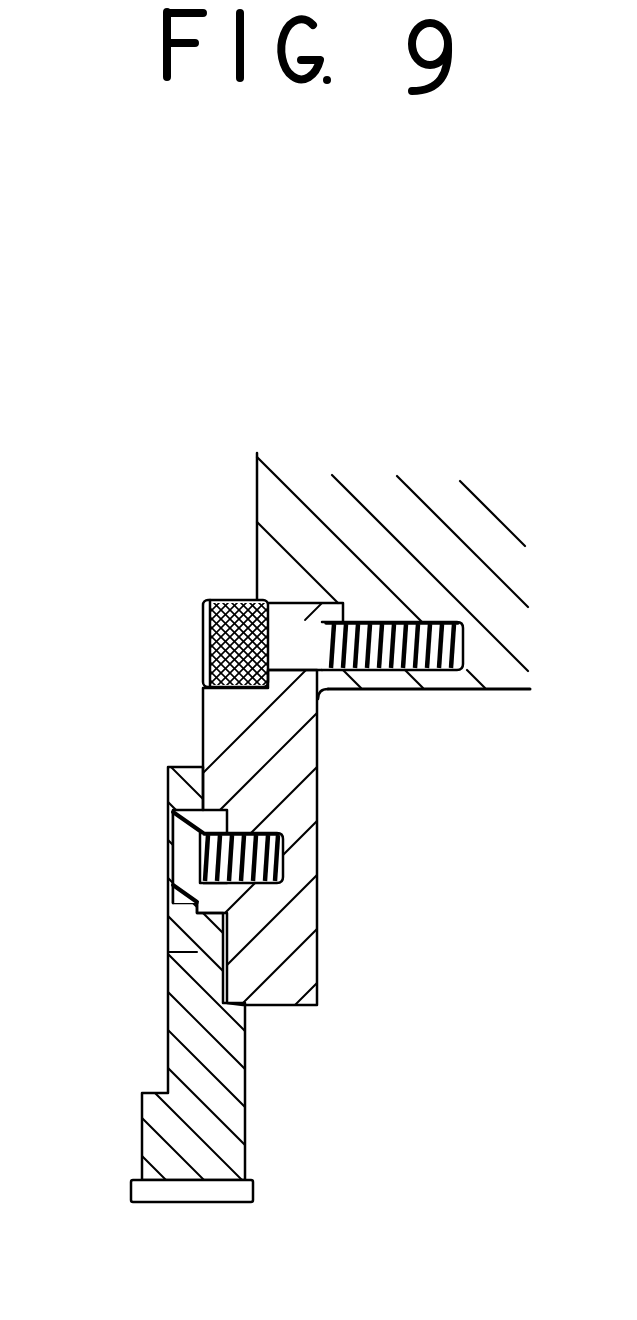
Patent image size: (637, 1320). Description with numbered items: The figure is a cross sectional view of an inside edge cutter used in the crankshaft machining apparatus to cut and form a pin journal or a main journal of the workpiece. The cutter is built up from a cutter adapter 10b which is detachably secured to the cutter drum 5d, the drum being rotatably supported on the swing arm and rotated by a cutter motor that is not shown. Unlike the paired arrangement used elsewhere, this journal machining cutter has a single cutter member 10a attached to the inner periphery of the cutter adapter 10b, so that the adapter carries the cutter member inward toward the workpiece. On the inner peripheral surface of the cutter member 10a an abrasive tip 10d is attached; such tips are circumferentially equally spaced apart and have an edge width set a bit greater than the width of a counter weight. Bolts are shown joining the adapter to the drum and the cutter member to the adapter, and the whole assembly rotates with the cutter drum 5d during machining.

The cutter drum 5d is at (268, 508).
The cutter member 10a is at (182, 1050).
The cutter adapter 10b is at (300, 767).
The abrasive tip 10d is at (163, 1200).